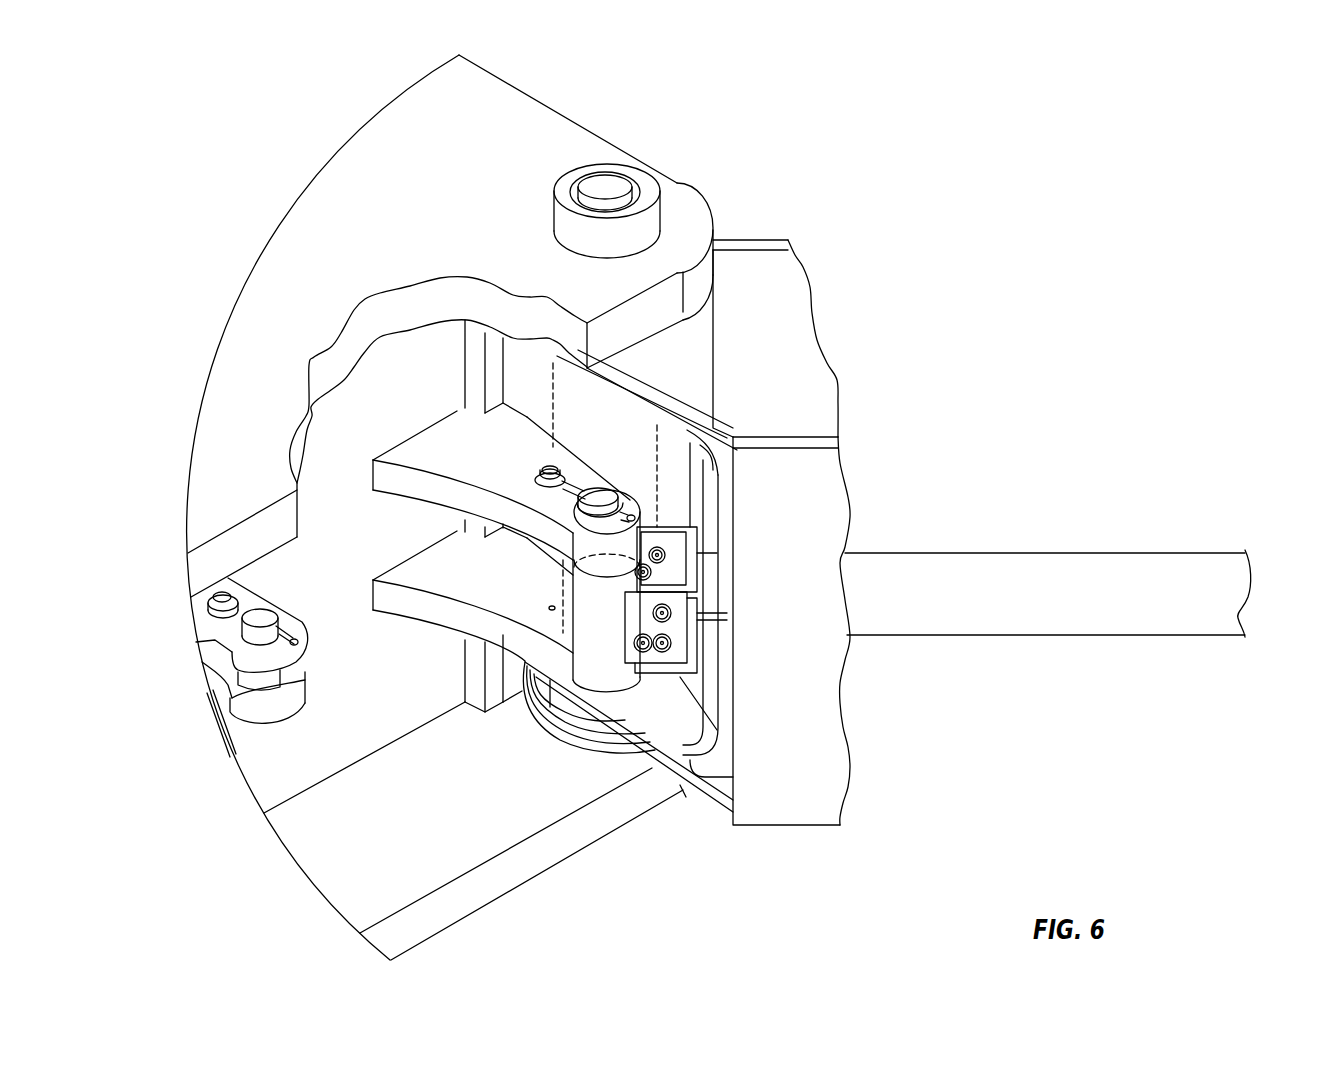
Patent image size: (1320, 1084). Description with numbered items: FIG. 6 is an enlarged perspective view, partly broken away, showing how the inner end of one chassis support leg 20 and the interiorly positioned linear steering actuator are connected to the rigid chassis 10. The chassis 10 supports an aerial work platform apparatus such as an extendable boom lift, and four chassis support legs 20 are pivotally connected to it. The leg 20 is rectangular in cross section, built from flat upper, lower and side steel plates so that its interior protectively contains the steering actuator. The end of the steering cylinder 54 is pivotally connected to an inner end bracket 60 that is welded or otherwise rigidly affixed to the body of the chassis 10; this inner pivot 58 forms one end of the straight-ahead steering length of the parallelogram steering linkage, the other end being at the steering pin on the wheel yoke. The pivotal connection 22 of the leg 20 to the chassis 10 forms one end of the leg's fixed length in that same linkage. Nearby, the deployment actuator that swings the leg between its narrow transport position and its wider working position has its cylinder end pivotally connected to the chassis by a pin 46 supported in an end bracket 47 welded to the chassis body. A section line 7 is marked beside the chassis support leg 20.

The chassis 10 is at (573, 123).
The support leg pivotal connection 22 is at (660, 200).
The chassis support leg 20 is at (825, 360).
The steering cylinder 54 is at (890, 553).
The steering actuator inner pivot 58 is at (606, 488).
The inner end bracket 60 is at (453, 480).
The end bracket 47 is at (263, 600).
The pin 46 is at (240, 627).
The section line for FIG. 7 is at (858, 120).